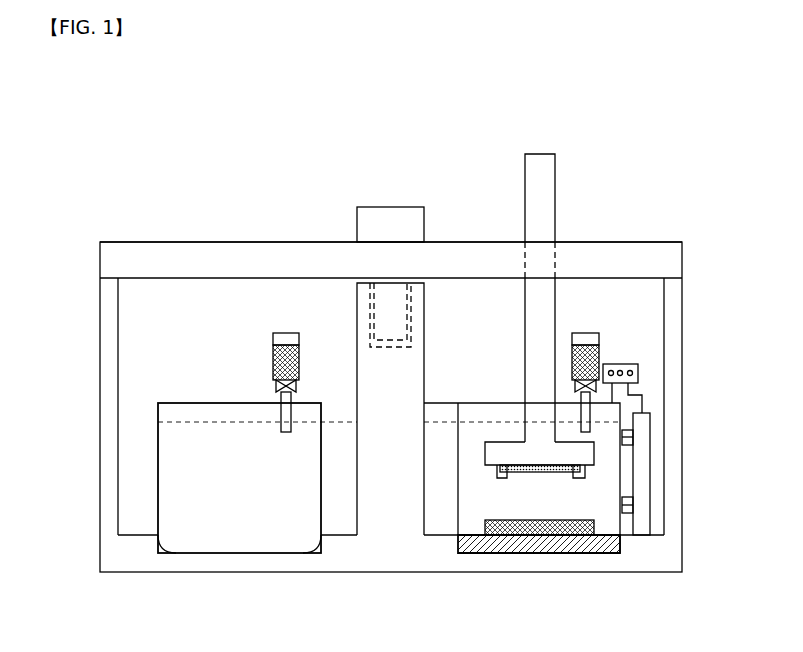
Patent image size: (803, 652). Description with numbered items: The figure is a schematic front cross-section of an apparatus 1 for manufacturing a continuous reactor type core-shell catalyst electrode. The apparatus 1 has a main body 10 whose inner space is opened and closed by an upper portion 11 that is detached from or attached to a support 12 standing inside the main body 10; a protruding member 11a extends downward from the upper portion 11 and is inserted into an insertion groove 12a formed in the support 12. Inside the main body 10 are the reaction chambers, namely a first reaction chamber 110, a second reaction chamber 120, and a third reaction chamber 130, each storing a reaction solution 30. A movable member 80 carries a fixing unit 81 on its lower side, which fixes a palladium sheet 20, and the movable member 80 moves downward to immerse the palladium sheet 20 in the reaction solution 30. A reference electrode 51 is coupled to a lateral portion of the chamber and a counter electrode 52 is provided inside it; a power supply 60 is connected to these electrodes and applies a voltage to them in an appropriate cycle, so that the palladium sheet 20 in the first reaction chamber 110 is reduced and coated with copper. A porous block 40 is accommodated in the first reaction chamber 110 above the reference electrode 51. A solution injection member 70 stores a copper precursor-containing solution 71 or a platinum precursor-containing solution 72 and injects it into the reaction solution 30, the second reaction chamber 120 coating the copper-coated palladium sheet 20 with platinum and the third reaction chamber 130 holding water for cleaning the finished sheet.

The apparatus for manufacturing a continuous reactor type core-shell catalyst electr 1 is at (342, 156).
The main body 10 is at (100, 306).
The upper portion 11 is at (480, 242).
The protruding member 11a is at (391, 298).
The support 12 is at (424, 296).
The insertion groove 12a is at (366, 300).
The palladium sheet 20 is at (560, 475).
The reaction solution 30 is at (168, 481).
The porous block 40 is at (537, 535).
The reference electrode 51 is at (642, 413).
The counter electrode 52 is at (580, 546).
The power supply 60 is at (630, 364).
The solution injection member 70 is at (287, 333).
The copper precursor-containing solution 71 is at (599, 358).
The platinum precursor-containing solution 72 is at (273, 360).
The movable member 80 is at (555, 190).
The fixing unit 81 is at (590, 468).
The first reaction chamber 110 is at (633, 497).
The second reaction chamber 120 is at (158, 515).
The third reaction chamber 130 is at (436, 528).